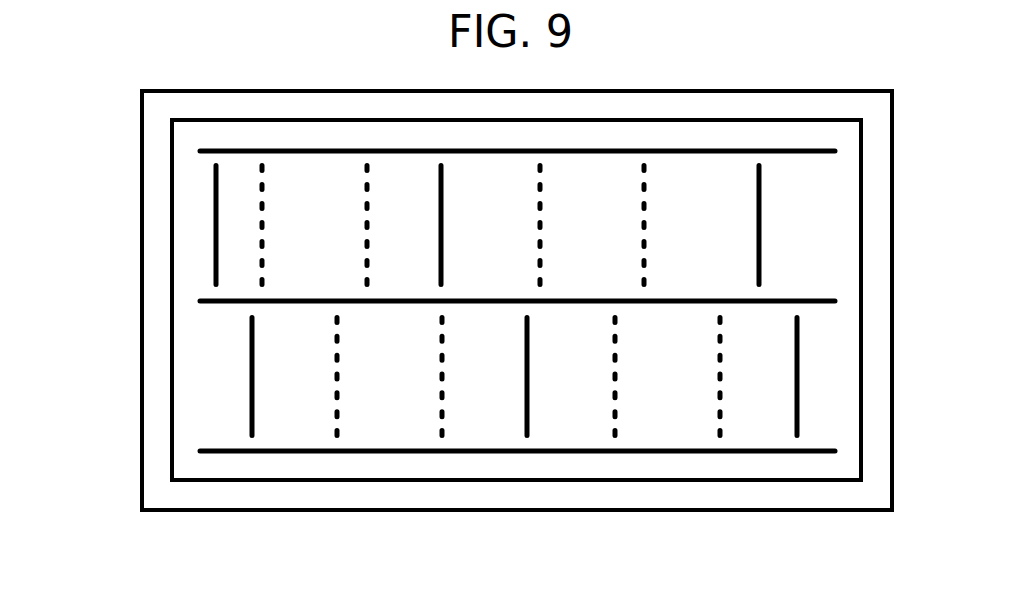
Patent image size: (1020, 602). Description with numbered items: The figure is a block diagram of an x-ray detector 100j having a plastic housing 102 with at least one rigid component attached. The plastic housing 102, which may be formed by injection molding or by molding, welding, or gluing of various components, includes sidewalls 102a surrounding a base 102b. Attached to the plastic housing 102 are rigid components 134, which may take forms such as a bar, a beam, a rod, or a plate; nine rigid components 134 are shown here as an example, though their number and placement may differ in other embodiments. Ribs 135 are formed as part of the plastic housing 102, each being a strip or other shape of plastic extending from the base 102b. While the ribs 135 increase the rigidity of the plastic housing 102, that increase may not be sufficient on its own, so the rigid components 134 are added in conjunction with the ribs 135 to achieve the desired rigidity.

The x-ray detector 100j is at (118, 87).
The plastic housing 102 is at (258, 91).
The sidewalls 102a is at (152, 300).
The base 102b is at (383, 421).
The rigid component 134 is at (623, 451).
The ribs 135 is at (720, 440).